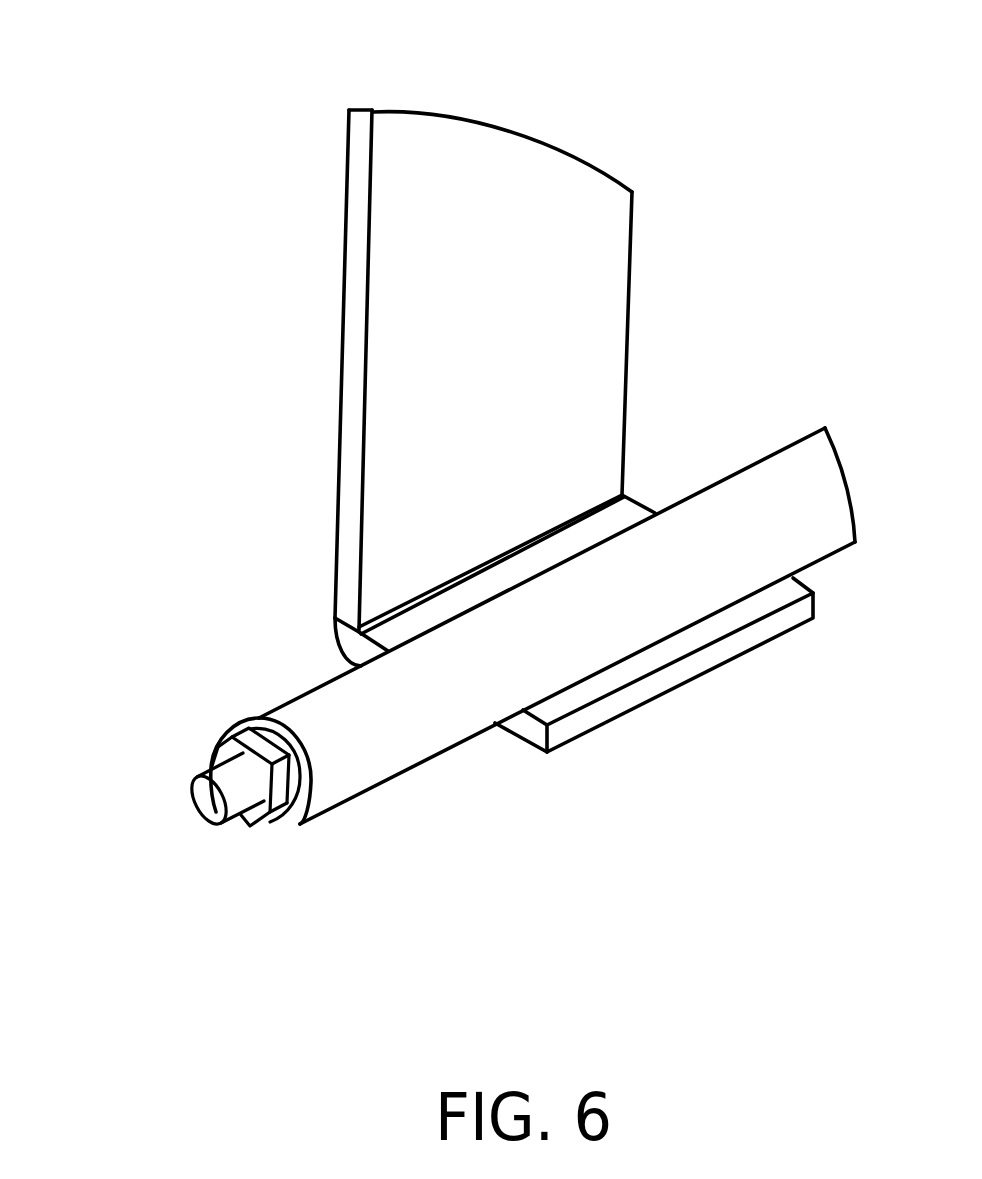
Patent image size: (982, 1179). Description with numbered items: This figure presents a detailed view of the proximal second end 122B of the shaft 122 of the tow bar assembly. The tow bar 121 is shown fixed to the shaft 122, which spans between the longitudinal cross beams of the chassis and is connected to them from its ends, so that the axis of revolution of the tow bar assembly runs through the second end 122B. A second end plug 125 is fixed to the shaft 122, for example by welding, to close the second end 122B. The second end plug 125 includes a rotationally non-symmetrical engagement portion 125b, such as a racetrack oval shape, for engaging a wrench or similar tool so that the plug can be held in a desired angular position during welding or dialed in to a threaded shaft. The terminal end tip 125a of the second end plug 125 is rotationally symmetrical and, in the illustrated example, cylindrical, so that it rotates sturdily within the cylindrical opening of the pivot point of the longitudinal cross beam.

The tow bar 121 is at (460, 133).
The shaft 122 is at (427, 735).
The second end 122B is at (226, 705).
The second end plug 125 is at (252, 838).
The terminal end tip 125a is at (208, 803).
The rotationally non-symmetrical engagement portion 125b is at (287, 800).